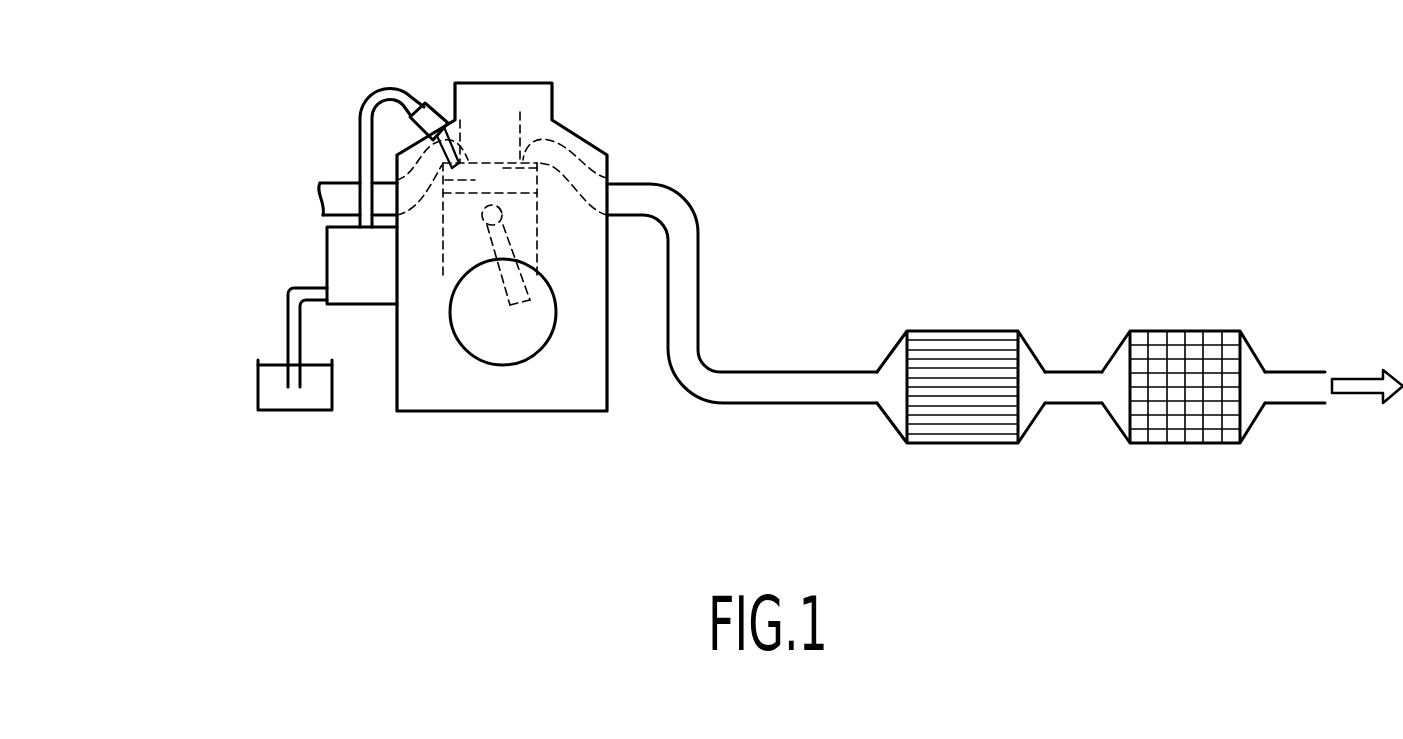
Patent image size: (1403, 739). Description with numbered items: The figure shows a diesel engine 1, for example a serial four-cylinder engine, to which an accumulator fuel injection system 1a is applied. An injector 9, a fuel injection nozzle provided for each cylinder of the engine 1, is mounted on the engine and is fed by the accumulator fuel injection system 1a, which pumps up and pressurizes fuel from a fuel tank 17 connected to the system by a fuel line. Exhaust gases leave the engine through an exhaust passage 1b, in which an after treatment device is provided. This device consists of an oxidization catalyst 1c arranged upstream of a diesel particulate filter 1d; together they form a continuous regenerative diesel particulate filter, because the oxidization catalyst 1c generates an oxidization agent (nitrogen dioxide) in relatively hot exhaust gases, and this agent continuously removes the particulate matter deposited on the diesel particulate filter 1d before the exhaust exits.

The diesel engine 1 is at (493, 412).
The accumulator fuel injection system 1a is at (340, 247).
The exhaust passage 1b is at (692, 277).
The oxidization catalyst 1c is at (950, 331).
The diesel particulate filter 1d is at (1172, 331).
The injector 9 is at (437, 120).
The fuel tank 17 is at (258, 390).